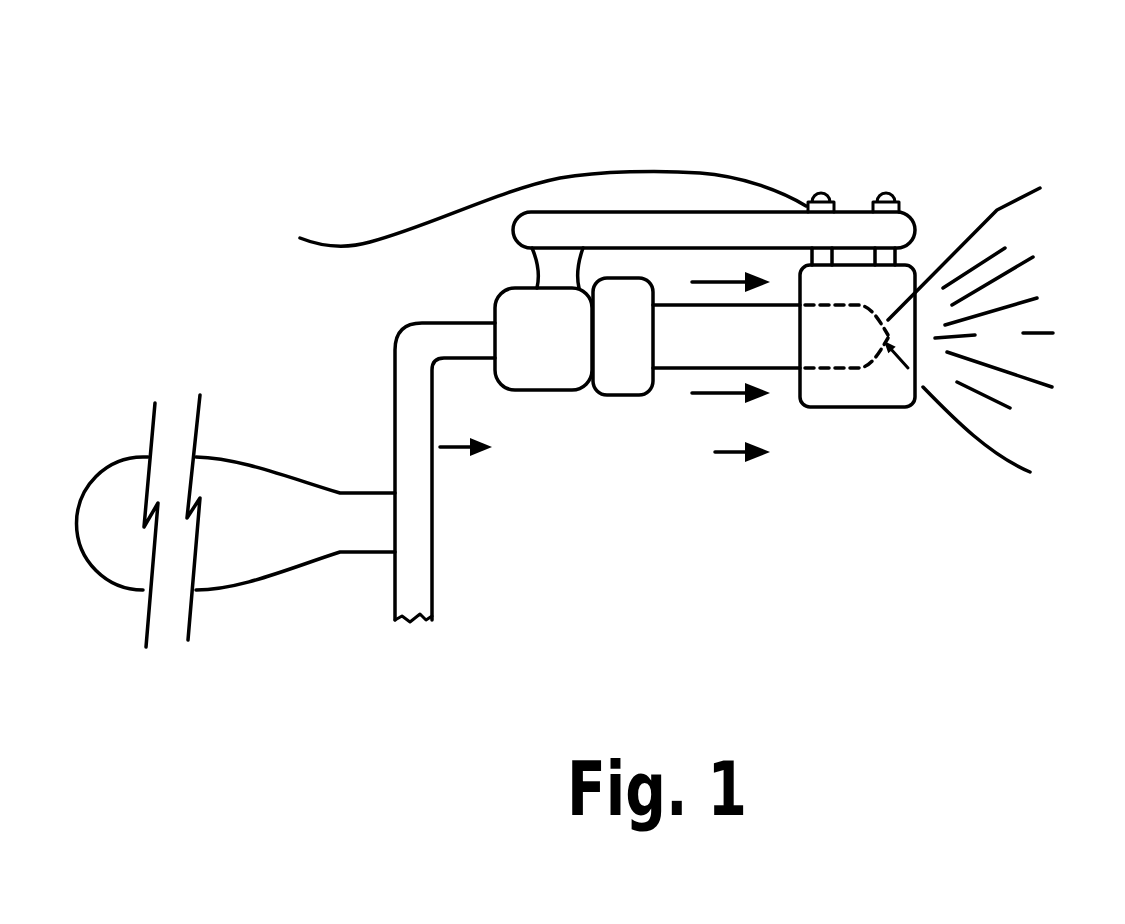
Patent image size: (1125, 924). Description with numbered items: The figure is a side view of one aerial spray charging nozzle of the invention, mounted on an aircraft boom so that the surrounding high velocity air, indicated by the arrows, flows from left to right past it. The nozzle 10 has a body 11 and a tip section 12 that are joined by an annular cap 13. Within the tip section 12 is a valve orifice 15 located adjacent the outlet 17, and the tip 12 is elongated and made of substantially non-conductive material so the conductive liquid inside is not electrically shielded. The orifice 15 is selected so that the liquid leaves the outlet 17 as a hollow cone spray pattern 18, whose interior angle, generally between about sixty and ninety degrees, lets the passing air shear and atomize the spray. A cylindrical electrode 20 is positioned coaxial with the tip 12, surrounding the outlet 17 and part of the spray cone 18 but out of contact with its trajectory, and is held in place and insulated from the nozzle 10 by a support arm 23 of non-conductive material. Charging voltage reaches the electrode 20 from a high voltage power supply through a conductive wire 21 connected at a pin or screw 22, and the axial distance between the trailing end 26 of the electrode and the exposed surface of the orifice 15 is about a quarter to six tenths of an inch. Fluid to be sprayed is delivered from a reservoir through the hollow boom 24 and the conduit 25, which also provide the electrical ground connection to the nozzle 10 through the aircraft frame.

The nozzle 10 is at (692, 432).
The body 11 is at (565, 393).
The tip section 12 is at (780, 393).
The annular cap 13 is at (628, 395).
The valve orifice 15 is at (878, 340).
The outlet 17 is at (885, 348).
The hollow cone spray pattern 18 is at (1013, 467).
The electrode 20 is at (827, 408).
The conductive wire 21 is at (678, 170).
The pin or screw 22 is at (818, 193).
The support arm 23 is at (860, 208).
The hollow boom 24 is at (273, 580).
The conduit 25 is at (395, 367).
The trailing or downwind end 26 is at (927, 268).